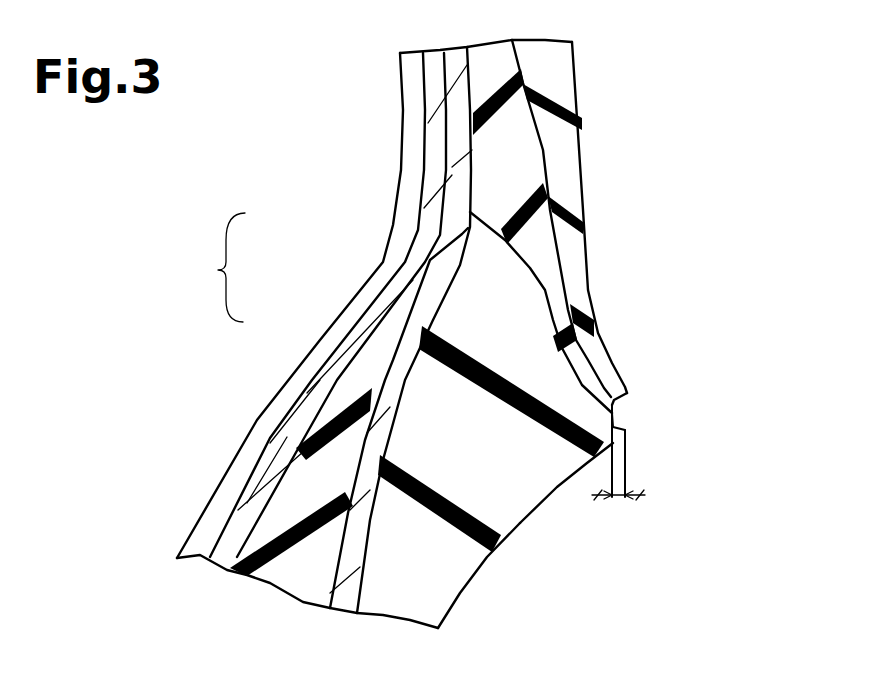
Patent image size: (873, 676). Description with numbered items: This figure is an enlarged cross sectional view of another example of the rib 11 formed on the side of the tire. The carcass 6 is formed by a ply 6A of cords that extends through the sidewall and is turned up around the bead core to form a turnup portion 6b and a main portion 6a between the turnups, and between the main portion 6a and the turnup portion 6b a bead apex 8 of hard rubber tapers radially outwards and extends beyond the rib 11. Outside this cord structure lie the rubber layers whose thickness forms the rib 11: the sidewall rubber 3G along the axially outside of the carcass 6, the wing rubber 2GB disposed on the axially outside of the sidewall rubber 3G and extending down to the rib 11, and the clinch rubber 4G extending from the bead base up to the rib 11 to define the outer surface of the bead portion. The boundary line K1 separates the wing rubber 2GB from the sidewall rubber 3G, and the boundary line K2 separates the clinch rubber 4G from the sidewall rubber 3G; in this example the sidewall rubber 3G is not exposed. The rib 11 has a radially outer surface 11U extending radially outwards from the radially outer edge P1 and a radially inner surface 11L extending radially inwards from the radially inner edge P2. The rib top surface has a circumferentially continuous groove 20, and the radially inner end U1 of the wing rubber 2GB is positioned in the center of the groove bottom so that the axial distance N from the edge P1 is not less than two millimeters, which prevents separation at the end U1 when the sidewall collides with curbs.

The wing rubber 2GB is at (562, 72).
The sidewall rubber 3G is at (512, 167).
The boundary line K1 is at (547, 172).
The boundary line K2 is at (540, 303).
The radially outer surface 11U is at (590, 300).
The rib 11 is at (608, 373).
The radially outer edge P1 is at (622, 393).
The radially inner end U1 is at (632, 417).
The groove 20 is at (630, 419).
The radially inner edge P2 is at (625, 430).
The axial distance N is at (618, 514).
The radially inner surface 11L is at (553, 487).
The clinch rubber 4G is at (463, 563).
The bead apex 8 is at (290, 500).
The main portion 6a is at (433, 178).
The turnup portion 6b is at (417, 307).
The ply 6A is at (327, 330).
The carcass 6 is at (185, 267).